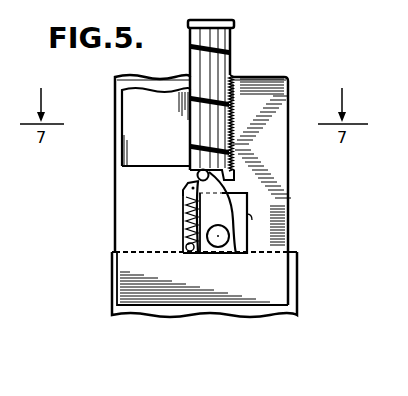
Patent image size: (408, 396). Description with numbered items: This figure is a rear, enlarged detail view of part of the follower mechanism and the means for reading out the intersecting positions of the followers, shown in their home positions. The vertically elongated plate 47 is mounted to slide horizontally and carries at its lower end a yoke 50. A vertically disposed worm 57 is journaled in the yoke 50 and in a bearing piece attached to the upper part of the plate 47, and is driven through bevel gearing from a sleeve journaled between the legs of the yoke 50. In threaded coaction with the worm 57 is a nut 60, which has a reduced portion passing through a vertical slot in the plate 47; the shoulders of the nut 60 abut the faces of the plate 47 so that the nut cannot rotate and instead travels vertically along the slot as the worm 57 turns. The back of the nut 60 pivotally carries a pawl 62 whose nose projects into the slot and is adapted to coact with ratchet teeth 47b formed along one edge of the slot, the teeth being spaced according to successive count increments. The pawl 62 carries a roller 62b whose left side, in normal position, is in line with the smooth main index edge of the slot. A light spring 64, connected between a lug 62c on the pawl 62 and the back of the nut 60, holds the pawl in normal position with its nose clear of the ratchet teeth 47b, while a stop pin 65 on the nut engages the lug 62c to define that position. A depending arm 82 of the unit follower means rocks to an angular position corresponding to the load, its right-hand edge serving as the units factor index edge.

The plate 47 is at (289, 210).
The ratchet teeth 47b is at (233, 100).
The yoke 50 is at (297, 284).
The worm 57 is at (233, 63).
The nut 60 is at (248, 222).
The pawl 62 is at (215, 212).
The roller 62b is at (197, 173).
The lug 62c is at (187, 185).
The spring 64 is at (183, 217).
The stop pin 65 is at (185, 201).
The depending arm 82 is at (137, 99).